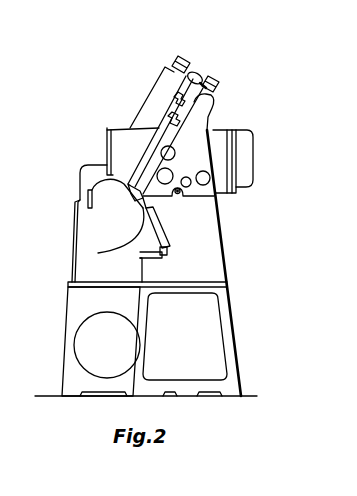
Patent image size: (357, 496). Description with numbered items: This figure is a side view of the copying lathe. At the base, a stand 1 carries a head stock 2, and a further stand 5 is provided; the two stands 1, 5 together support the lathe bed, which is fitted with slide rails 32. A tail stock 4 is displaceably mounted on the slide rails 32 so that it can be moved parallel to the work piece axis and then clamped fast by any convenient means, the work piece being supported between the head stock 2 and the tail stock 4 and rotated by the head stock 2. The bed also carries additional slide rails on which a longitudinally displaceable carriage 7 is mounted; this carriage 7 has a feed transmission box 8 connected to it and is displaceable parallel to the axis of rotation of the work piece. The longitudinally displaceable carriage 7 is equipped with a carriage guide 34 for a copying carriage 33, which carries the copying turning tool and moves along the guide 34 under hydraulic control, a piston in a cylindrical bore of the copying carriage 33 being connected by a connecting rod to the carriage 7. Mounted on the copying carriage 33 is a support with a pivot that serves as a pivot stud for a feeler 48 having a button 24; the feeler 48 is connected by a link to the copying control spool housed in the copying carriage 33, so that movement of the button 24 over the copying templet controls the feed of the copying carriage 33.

The stand 1 is at (88, 300).
The head stock 2 is at (95, 172).
The tail stock 4 is at (103, 205).
The further stand 5 is at (208, 190).
The longitudinally displaceable carriage 7 is at (217, 135).
The feed transmission box 8 is at (120, 143).
The button 24 is at (215, 92).
The slide rails 32 is at (160, 253).
The copying carriage 33 is at (161, 89).
The carriage guide 34 is at (180, 97).
The feeler 48 is at (200, 77).